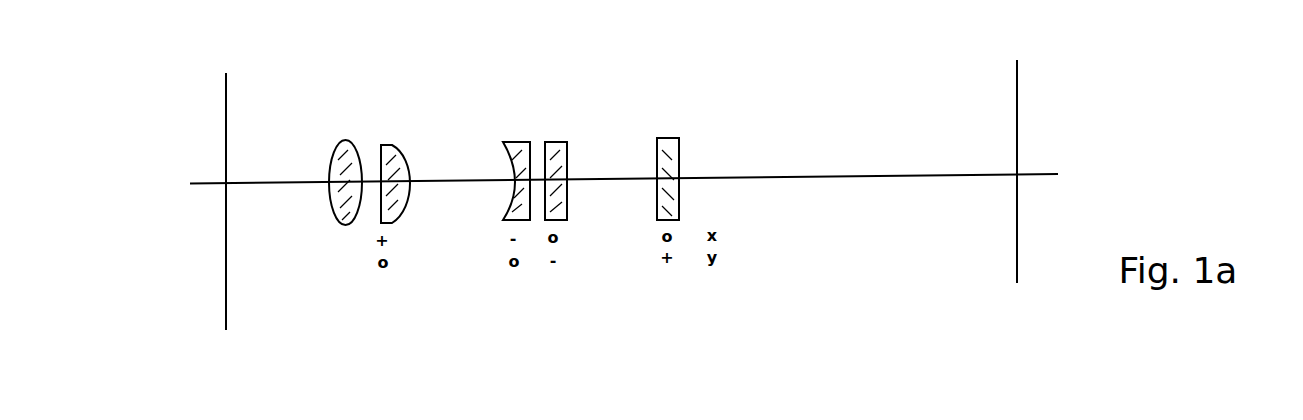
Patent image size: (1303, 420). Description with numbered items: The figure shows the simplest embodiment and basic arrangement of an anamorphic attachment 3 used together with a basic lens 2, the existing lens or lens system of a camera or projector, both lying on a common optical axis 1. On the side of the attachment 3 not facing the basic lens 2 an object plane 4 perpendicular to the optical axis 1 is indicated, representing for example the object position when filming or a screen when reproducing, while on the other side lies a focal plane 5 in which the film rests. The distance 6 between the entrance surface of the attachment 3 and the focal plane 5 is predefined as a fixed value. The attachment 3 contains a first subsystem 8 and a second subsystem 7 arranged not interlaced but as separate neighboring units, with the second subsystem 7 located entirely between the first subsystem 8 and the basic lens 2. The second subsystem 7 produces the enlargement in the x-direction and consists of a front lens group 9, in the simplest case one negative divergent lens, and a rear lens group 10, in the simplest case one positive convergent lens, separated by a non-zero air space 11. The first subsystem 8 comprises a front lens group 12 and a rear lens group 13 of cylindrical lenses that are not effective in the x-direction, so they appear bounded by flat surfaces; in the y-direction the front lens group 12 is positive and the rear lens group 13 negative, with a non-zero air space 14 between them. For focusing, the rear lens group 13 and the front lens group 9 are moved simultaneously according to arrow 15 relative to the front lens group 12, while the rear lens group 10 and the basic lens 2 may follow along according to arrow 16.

The optical axis 1 is at (868, 176).
The basic lens 2 is at (338, 221).
The anamorphic attachment 3 is at (723, 261).
The object plane 4 is at (1017, 123).
The focal plane 5 is at (226, 150).
The distance 6 is at (682, 312).
The second subsystem 7 is at (367, 83).
The first subsystem 8 is at (677, 80).
The front lens group 9 is at (520, 153).
The rear lens group 10 is at (388, 145).
The air space 11 is at (456, 179).
The front lens group 12 is at (680, 155).
The rear lens group 13 is at (565, 148).
The air space 14 is at (617, 178).
The arrow 15 is at (501, 55).
The arrow 16 is at (404, 58).